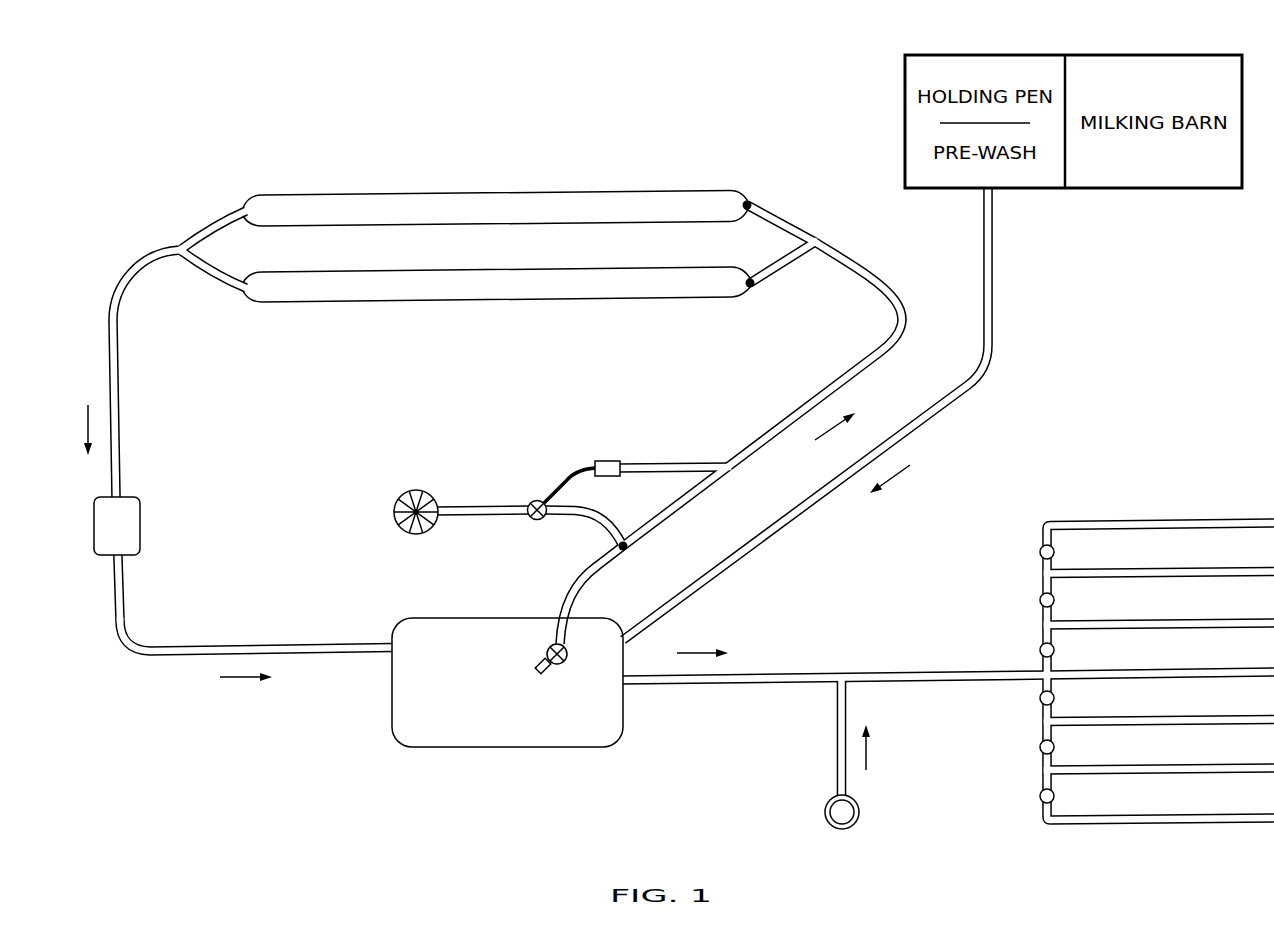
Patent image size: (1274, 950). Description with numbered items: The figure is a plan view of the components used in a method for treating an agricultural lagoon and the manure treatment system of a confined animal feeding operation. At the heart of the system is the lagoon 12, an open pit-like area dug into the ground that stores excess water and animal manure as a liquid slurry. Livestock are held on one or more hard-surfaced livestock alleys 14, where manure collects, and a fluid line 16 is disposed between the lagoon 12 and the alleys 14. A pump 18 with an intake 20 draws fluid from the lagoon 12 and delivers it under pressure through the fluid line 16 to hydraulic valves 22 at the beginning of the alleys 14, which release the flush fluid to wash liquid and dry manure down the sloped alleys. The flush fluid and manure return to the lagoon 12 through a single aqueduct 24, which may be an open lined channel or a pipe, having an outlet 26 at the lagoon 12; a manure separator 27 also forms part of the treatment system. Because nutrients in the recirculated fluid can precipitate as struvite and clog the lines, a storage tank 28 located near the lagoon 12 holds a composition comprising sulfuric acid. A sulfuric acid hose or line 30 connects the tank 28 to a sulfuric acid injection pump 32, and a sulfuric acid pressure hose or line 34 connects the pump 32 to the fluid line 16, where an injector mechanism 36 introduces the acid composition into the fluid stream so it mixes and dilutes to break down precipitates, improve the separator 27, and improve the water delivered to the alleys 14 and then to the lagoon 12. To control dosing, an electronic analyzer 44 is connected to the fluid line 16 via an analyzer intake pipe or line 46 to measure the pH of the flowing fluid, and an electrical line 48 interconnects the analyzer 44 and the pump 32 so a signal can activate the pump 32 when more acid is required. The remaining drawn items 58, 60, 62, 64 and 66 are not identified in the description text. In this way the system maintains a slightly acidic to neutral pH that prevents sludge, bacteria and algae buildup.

The lagoon 12 is at (472, 725).
The livestock alleys 14 is at (495, 207).
The fluid line 16 is at (800, 413).
The pump 18 is at (552, 642).
The intake 20 is at (543, 660).
The hydraulic valves 22 is at (750, 203).
The aqueduct 24 is at (109, 352).
The outlet 26 is at (406, 637).
The manure separator 27 is at (108, 527).
The storage tank 28 is at (405, 492).
The sulfuric acid hose or line 30 is at (468, 507).
The sulfuric acid injection pump 32 is at (535, 499).
The sulfuric acid pressure hose or line 34 is at (593, 513).
The injector mechanism 36 is at (634, 547).
The electronic analyzer 44 is at (607, 460).
The analyzer intake pipe or line 46 is at (662, 463).
The electrical line 48 is at (566, 473).
The outlet pipe 58 is at (717, 685).
The water source 60 is at (860, 810).
The water supply pipe 62 is at (846, 655).
The distribution manifold 64 is at (1148, 523).
The stall pipes 66 is at (1132, 751).